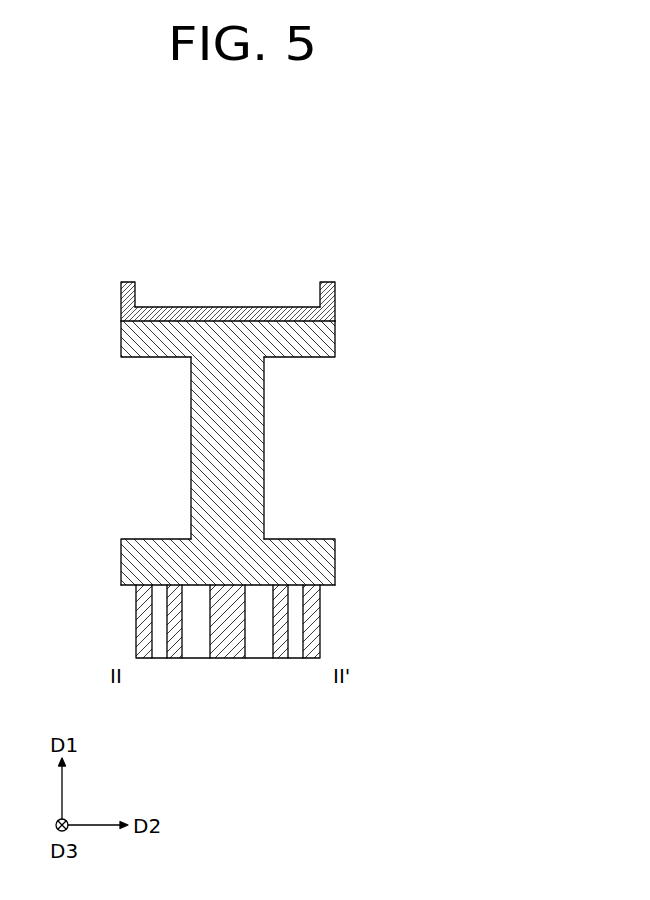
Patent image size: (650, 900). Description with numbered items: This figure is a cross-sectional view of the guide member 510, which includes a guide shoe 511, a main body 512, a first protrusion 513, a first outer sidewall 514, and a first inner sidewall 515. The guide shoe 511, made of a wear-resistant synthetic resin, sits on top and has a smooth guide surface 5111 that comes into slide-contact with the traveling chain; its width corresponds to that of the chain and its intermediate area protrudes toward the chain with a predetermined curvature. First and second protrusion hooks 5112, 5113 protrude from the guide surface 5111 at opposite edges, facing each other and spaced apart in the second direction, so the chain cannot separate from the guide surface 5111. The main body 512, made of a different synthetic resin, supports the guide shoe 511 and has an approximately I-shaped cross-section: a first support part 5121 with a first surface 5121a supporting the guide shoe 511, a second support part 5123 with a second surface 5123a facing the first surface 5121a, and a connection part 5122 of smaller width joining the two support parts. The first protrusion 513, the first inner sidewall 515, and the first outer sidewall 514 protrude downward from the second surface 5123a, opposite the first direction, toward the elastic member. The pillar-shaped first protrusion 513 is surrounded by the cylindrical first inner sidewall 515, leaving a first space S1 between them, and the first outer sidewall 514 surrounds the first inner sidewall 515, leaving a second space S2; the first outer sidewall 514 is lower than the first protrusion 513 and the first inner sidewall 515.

The guide member 510 is at (447, 155).
The guide shoe 511 is at (357, 213).
The guide surface 5111 is at (220, 307).
The first protrusion hook 5112 is at (327, 282).
The second protrusion hook 5113 is at (127, 282).
The main body 512 is at (438, 292).
The first support part 5121 is at (322, 338).
The first surface 5121a is at (308, 316).
The connection part 5122 is at (252, 388).
The second support part 5123 is at (322, 555).
The second surface 5123a is at (296, 598).
The first protrusion 513 is at (227, 645).
The first outer sidewall 514 is at (143, 642).
The first inner sidewall 515 is at (282, 645).
The first space S1 is at (186, 620).
The second space S2 is at (302, 620).